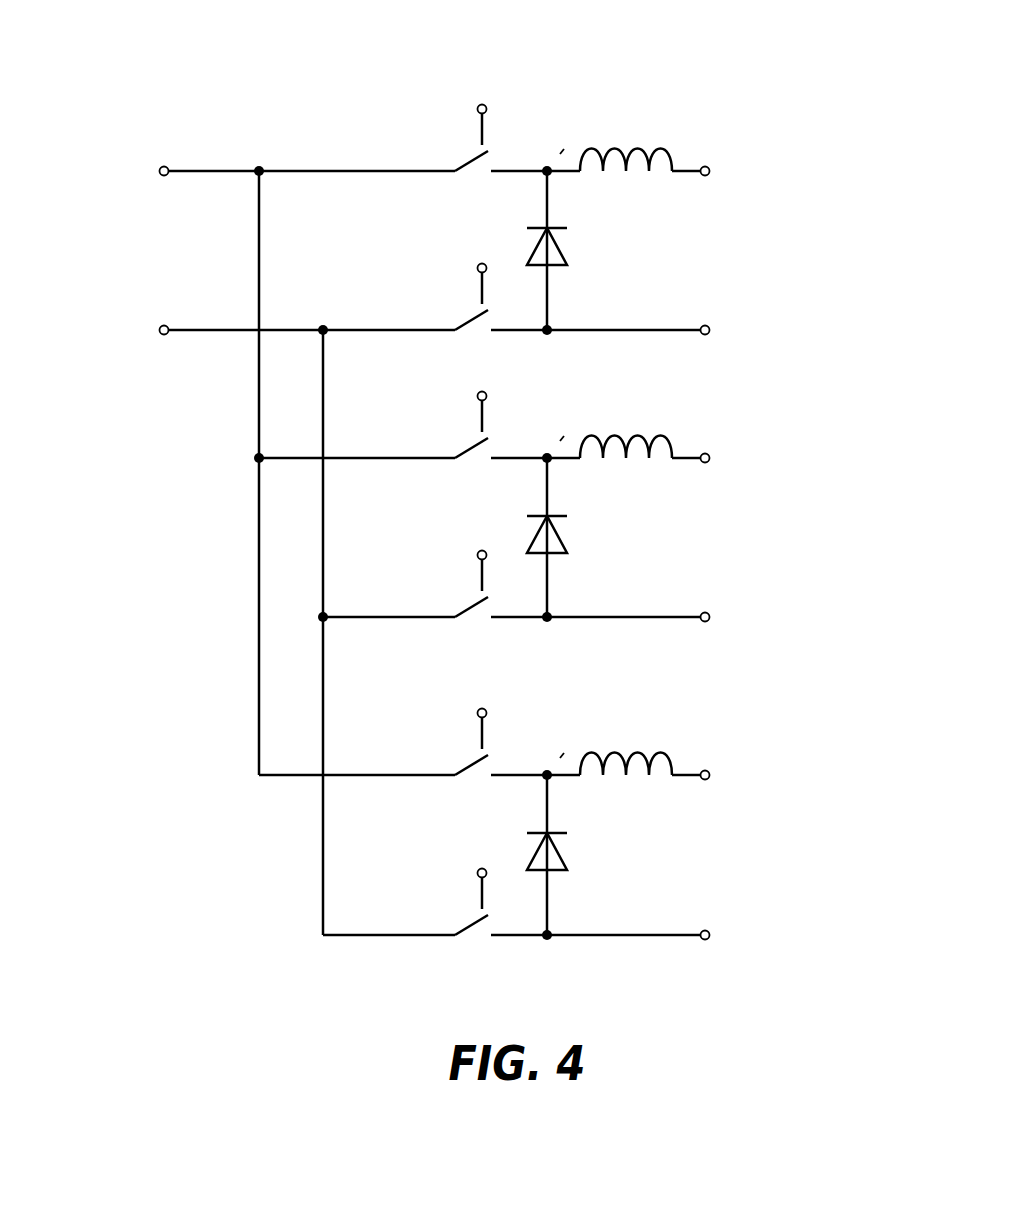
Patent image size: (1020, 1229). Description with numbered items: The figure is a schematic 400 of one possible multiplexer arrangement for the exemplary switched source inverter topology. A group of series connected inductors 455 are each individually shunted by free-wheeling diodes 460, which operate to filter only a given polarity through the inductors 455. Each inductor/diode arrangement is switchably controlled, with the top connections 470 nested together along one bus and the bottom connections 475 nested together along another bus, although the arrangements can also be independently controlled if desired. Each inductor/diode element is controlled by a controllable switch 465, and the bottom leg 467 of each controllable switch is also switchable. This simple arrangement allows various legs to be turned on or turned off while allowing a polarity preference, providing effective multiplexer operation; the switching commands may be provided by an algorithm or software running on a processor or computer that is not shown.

The schematic 400 is at (828, 33).
The inductors 455 is at (642, 179).
The free-wheeling diodes 460 is at (584, 245).
The controllable switch 465 is at (458, 134).
The bottom leg 467 is at (443, 297).
The top connections 470 is at (236, 553).
The bottom connections 475 is at (296, 887).